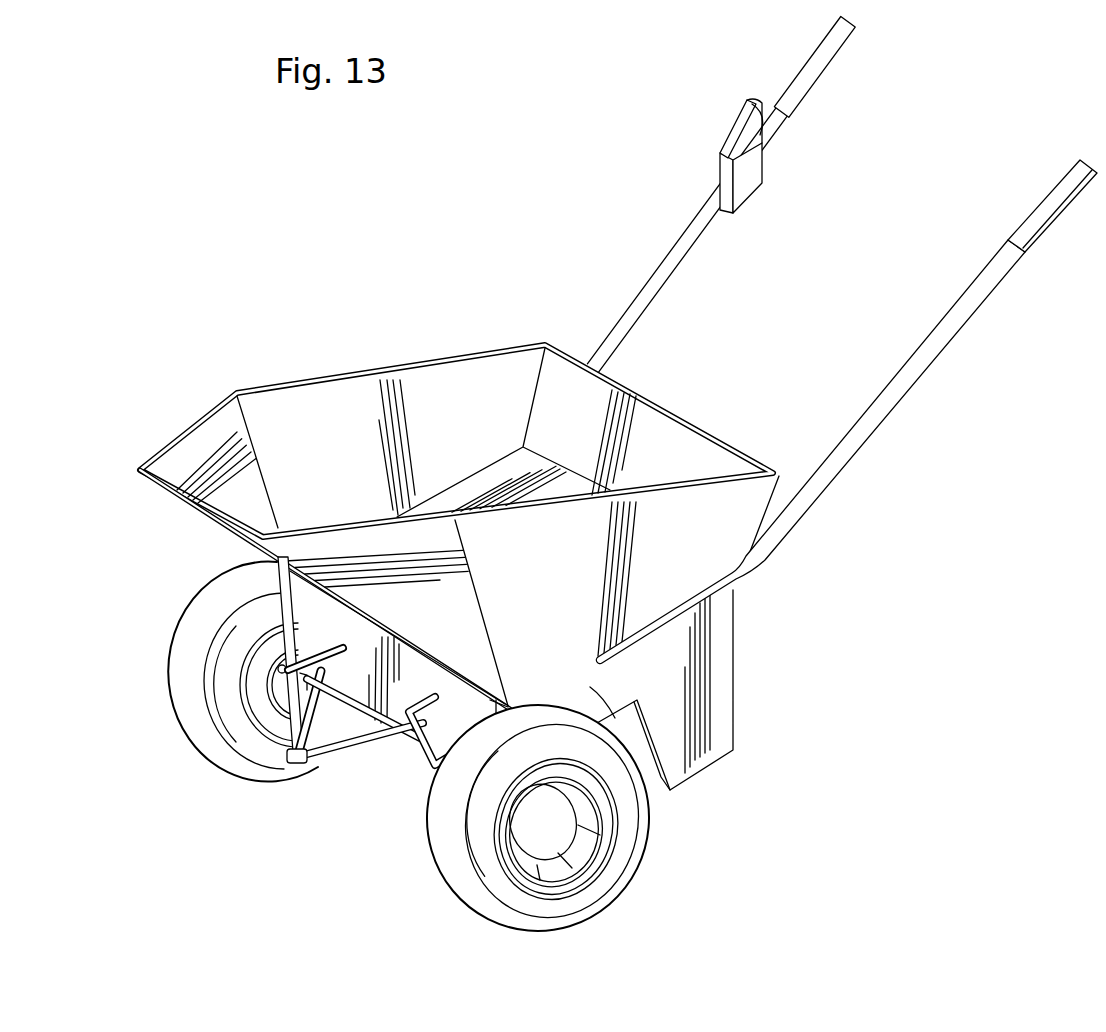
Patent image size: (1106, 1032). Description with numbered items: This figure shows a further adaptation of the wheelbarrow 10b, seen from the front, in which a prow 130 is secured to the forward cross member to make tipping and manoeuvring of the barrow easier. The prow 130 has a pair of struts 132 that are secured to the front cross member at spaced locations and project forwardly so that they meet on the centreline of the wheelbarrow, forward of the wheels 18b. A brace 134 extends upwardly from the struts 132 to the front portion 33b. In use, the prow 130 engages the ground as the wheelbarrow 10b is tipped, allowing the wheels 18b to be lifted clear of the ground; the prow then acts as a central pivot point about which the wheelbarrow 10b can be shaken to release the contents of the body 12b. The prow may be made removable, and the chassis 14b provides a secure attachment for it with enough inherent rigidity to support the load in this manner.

The wheelbarrow 10b is at (585, 479).
The body 12b is at (296, 402).
The chassis 14b is at (590, 690).
The wheels 18b is at (617, 860).
The prow 130 is at (268, 602).
The struts 132 is at (326, 768).
The brace 134 is at (280, 672).
The front portion 33b is at (383, 748).